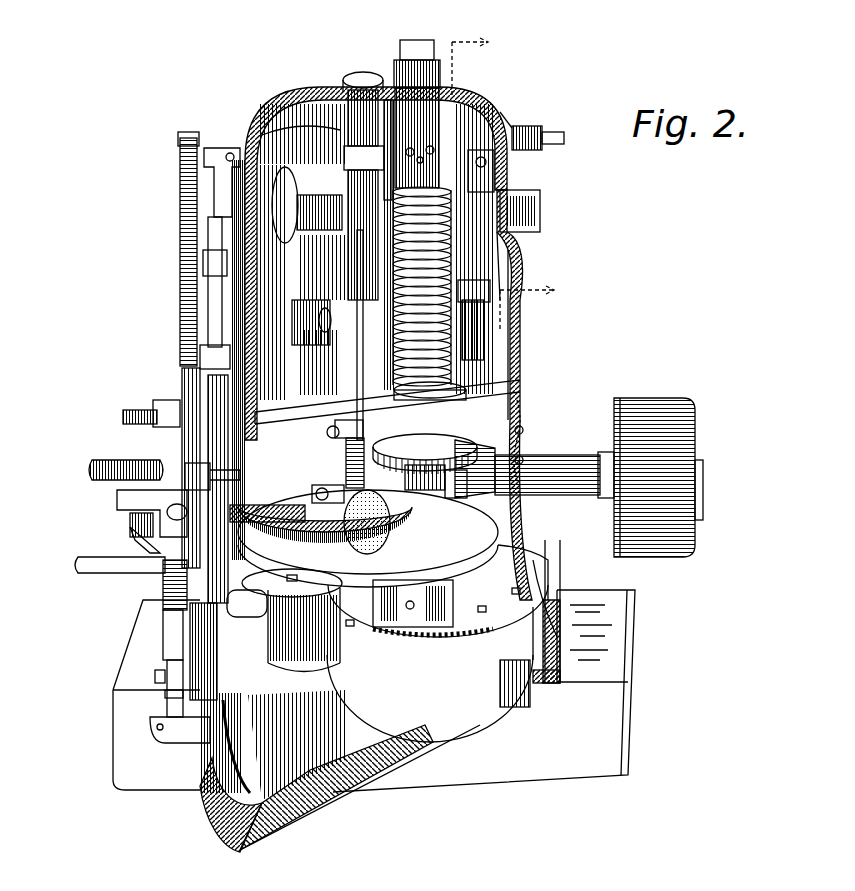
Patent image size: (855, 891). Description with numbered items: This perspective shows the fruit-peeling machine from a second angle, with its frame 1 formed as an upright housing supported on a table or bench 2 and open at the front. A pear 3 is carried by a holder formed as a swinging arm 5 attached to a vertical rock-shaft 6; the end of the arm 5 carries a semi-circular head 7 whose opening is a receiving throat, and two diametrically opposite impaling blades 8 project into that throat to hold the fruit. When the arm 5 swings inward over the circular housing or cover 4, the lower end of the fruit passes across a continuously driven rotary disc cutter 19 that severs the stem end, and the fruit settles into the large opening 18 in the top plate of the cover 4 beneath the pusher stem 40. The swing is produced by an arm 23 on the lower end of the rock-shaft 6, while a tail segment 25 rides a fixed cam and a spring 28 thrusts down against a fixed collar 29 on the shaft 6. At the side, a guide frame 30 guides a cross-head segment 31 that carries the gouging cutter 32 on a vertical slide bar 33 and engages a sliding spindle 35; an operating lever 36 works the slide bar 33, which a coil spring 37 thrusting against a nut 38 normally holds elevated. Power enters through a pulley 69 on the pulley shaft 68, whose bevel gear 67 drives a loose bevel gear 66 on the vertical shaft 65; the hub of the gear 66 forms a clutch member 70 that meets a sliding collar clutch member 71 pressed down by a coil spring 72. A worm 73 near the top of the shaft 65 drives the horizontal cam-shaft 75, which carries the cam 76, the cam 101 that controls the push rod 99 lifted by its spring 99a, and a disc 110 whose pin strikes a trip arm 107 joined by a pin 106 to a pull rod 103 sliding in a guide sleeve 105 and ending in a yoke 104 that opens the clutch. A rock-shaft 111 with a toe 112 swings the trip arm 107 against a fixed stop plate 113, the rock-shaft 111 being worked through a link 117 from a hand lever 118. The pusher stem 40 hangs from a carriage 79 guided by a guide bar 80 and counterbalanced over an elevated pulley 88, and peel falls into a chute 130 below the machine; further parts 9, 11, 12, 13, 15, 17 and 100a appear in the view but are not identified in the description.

The frame 1 is at (500, 372).
The table or bench 2 is at (632, 636).
The pear 3 is at (374, 500).
The circular housing or cover 4 is at (552, 540).
The arm 5 is at (276, 570).
The vertical shaft 6 is at (168, 696).
The semi-circular head 7 is at (392, 560).
The impaling blades 8 is at (389, 486).
The pin 9 is at (322, 494).
The post 11 is at (192, 604).
The finger 12 is at (130, 535).
The block 13 is at (190, 642).
The nut 15 is at (155, 676).
The gear opening 17 is at (385, 630).
The large opening 18 is at (420, 532).
The rotary disc cutter 19 is at (325, 672).
The arm 23 is at (205, 740).
The segment 25 is at (150, 496).
The spring 28 is at (168, 592).
The fixed collar 29 is at (167, 682).
The guide frame 30 is at (186, 356).
The cross-head 31 is at (150, 428).
The gouging cutter 32 is at (185, 440).
The vertical slide bar 33 is at (130, 522).
The sliding spindle 35 is at (180, 280).
The operating lever 36 is at (92, 470).
The coil spring 37 is at (208, 232).
The nut 38 is at (178, 139).
The pusher stem 40 is at (387, 402).
The vertical shaft 65 is at (475, 456).
The bevel gear 66 is at (524, 428).
The bevel gear 67 is at (520, 462).
The pulley shaft 68 is at (604, 452).
The pulley 69 is at (690, 436).
The clutch member 70 is at (425, 452).
The clutch member 71 is at (335, 428).
The coil spring 72 is at (522, 332).
The worm 73 is at (422, 213).
The cam-shaft 75 is at (540, 222).
The cam 76 is at (270, 120).
The carriage 79 is at (330, 225).
The guide bar 80 is at (356, 108).
The pulley 88 is at (384, 172).
The push rod 99 is at (352, 440).
The spring 99a is at (327, 430).
The block 100a is at (300, 328).
The cam 101 is at (352, 150).
The pull rod 103 is at (470, 394).
The yoke 104 is at (486, 356).
The guide sleeve 105 is at (490, 300).
The pin 106 is at (518, 285).
The trip arm 107 is at (515, 258).
The disc 110 is at (496, 172).
The rock-shaft 111 is at (564, 138).
The short arm or toe 112 is at (528, 126).
The fixed stop plate 113 is at (495, 125).
The link 117 is at (214, 190).
The hand lever 118 is at (80, 568).
The chute 130 is at (272, 810).